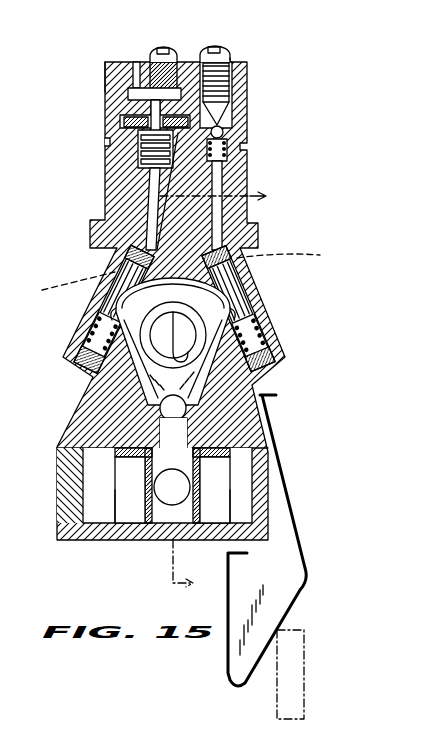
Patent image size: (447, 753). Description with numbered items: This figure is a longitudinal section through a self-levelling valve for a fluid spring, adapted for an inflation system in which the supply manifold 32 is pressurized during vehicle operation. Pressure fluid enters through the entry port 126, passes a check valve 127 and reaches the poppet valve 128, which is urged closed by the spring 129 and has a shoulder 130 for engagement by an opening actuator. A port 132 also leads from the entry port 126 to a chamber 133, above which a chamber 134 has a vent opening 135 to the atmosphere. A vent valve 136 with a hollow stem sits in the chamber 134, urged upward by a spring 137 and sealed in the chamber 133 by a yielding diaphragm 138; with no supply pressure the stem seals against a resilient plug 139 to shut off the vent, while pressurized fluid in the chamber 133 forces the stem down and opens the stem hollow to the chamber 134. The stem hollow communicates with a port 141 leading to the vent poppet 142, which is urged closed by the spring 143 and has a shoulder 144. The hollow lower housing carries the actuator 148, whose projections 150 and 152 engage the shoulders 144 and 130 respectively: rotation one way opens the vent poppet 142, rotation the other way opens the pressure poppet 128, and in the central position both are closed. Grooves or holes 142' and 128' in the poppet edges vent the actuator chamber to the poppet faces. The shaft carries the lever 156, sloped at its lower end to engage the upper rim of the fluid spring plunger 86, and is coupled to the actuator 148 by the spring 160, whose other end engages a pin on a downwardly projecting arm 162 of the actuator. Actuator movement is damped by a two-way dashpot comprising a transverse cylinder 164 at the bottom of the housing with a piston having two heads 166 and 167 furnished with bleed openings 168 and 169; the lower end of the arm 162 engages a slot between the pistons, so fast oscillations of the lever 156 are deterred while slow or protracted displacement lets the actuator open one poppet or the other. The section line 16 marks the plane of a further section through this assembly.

The supply manifold 32 is at (230, 60).
The pressure fluid entry port 126 is at (225, 100).
The check valve 127 is at (223, 132).
The poppet valve 128 is at (261, 195).
The grooves or holes in the poppet edge 128' is at (297, 256).
The spring 129 is at (272, 342).
The shoulder 130 is at (257, 298).
The port 132 is at (197, 61).
The chamber 133 is at (118, 108).
The chamber 134 is at (128, 95).
The vent opening 135 is at (138, 62).
The vent valve 136 is at (112, 126).
The spring 137 is at (137, 160).
The yielding diaphragm 138 is at (108, 142).
The resilient plug 139 is at (105, 76).
The port 141 is at (147, 228).
The vent poppet 142 is at (93, 268).
The grooves or holes in the poppet edge 142' is at (58, 286).
The spring 143 is at (67, 353).
The shoulder 144 is at (90, 325).
The actuator 148 is at (98, 387).
The projection 150 is at (120, 307).
The projection 152 is at (245, 285).
The lever 156 is at (290, 490).
The spring 160 is at (186, 394).
The arm 162 is at (181, 431).
The transverse cylinder 164 is at (93, 540).
The piston head 166 is at (115, 462).
The piston head 167 is at (230, 460).
The bleed opening 168 is at (137, 504).
The bleed opening 169 is at (228, 503).
The section line 16- 16 is at (222, 385).
The fluid spring plunger 86 is at (305, 640).